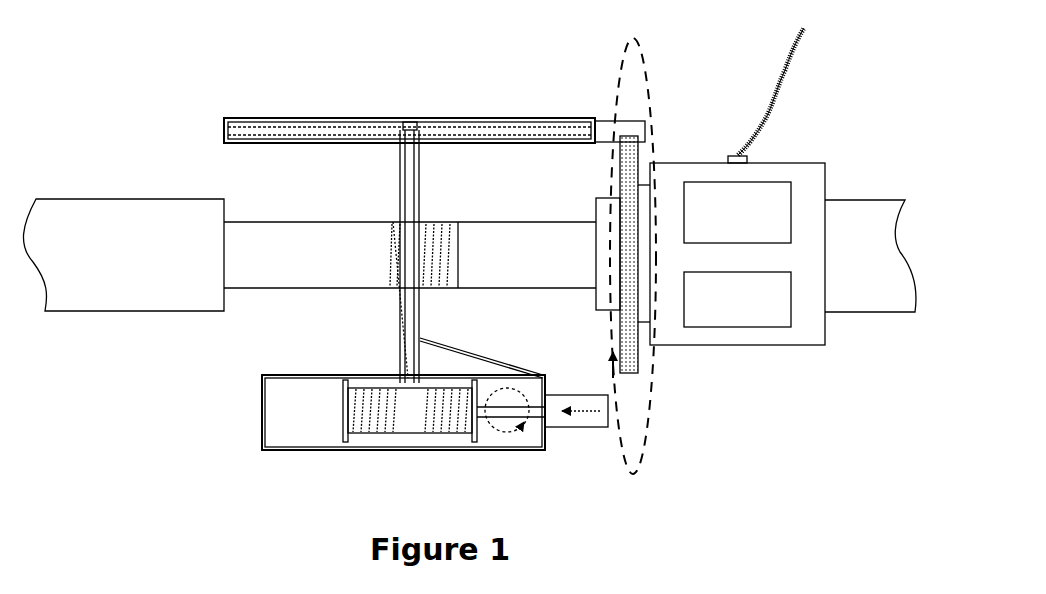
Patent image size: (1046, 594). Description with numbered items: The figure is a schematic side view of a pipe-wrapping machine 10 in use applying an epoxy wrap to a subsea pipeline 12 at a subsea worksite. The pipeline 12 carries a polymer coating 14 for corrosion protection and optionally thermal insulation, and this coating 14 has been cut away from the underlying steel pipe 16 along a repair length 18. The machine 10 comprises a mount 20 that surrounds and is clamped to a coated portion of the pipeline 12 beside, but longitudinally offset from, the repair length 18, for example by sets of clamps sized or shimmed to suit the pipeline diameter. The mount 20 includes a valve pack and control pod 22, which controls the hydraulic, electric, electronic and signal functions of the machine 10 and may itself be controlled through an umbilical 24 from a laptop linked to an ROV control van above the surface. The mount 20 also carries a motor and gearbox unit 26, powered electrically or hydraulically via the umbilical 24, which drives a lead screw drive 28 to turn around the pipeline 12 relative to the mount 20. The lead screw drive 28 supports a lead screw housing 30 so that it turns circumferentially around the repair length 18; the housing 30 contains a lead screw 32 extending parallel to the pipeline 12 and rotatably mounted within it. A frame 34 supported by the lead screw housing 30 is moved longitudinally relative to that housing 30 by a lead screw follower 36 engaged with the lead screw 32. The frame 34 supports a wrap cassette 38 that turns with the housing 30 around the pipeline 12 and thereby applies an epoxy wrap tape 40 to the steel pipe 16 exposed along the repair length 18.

The machine 10 is at (307, 77).
The subsea pipeline 12 is at (83, 162).
The polymer coating 14 is at (121, 295).
The steel pipe 16 is at (307, 272).
The repair length 18 is at (297, 213).
The mount 20 is at (770, 338).
The valve pack and control pod 22 is at (737, 212).
The umbilical 24 is at (794, 45).
The motor and gearbox unit 26 is at (737, 299).
The lead screw drive 28 is at (625, 343).
The lead screw housing 30 is at (475, 122).
The lead screw 32 is at (538, 130).
The frame 34 is at (420, 163).
The lead screw follower 36 is at (413, 122).
The wrap cassette 38 is at (287, 438).
The epoxy wrap tape 40 is at (395, 228).